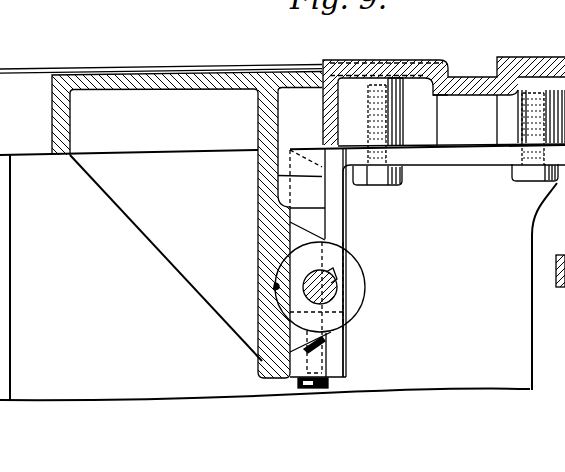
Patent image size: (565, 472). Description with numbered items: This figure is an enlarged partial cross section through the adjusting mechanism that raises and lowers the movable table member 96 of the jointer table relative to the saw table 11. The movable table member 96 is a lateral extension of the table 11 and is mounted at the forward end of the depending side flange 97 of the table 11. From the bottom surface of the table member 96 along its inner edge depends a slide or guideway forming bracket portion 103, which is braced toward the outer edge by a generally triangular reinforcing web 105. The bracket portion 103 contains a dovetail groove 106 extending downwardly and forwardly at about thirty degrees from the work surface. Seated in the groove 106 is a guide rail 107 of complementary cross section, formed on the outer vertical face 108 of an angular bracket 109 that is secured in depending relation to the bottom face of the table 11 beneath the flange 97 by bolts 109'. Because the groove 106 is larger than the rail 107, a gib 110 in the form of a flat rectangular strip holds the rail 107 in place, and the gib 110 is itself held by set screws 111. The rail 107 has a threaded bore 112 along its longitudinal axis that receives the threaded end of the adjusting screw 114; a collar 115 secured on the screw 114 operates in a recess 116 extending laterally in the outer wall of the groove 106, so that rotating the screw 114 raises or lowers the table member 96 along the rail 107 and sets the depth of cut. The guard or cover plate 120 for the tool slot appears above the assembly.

The table 11 is at (541, 57).
The movable table member 96 is at (206, 70).
The depending side flange 97 is at (319, 98).
The bracket portion 103 is at (262, 226).
The reinforcing web 105 is at (156, 231).
The dovetail groove 106 is at (353, 322).
The guide rail 107 is at (327, 246).
The outer vertical face 108 is at (278, 176).
The angular bracket 109 is at (451, 260).
The bolts 109' is at (466, 121).
The gib 110 is at (288, 343).
The set screws 111 is at (330, 383).
The threaded bore 112 is at (331, 271).
The adjusting screw 114 is at (338, 290).
The collar 115 is at (366, 275).
The recess 116 is at (274, 286).
The guard or cover plate 120 is at (126, 70).